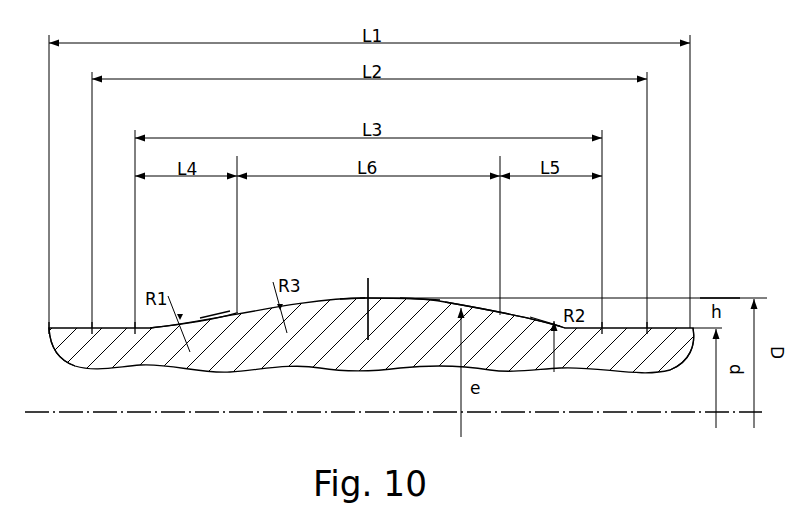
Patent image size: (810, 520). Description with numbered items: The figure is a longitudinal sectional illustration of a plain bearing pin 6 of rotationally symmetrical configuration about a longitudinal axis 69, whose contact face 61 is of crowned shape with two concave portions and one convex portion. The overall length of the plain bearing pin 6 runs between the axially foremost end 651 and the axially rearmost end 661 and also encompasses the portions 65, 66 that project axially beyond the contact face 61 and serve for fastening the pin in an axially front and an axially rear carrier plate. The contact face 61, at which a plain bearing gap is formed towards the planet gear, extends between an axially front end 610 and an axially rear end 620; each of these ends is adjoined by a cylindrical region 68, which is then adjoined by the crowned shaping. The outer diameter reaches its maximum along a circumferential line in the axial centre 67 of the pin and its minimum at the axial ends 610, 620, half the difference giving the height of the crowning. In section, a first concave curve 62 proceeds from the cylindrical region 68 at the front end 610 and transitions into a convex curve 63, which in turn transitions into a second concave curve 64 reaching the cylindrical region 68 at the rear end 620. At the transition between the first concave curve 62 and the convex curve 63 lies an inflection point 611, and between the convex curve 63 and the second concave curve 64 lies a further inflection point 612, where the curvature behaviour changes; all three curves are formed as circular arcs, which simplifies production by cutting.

The plain bearing pin 6 is at (606, 245).
The contact face 61 is at (432, 297).
The inflection point 611 is at (237, 313).
The further inflection point 612 is at (500, 316).
The first concave curve 62 is at (217, 318).
The convex curve 63 is at (350, 297).
The second concave curve 64 is at (540, 318).
The axially projecting portion 65 is at (70, 355).
The axially foremost end 651 is at (49, 327).
The axially projecting portion 66 is at (672, 352).
The axial centre 67 is at (375, 296).
The cylindrical region 68 is at (133, 326).
The longitudinal axis 69 is at (560, 414).
The axially front end 610 is at (89, 325).
The axially rear end 620 is at (649, 326).
The axially rearmost end 661 is at (716, 296).